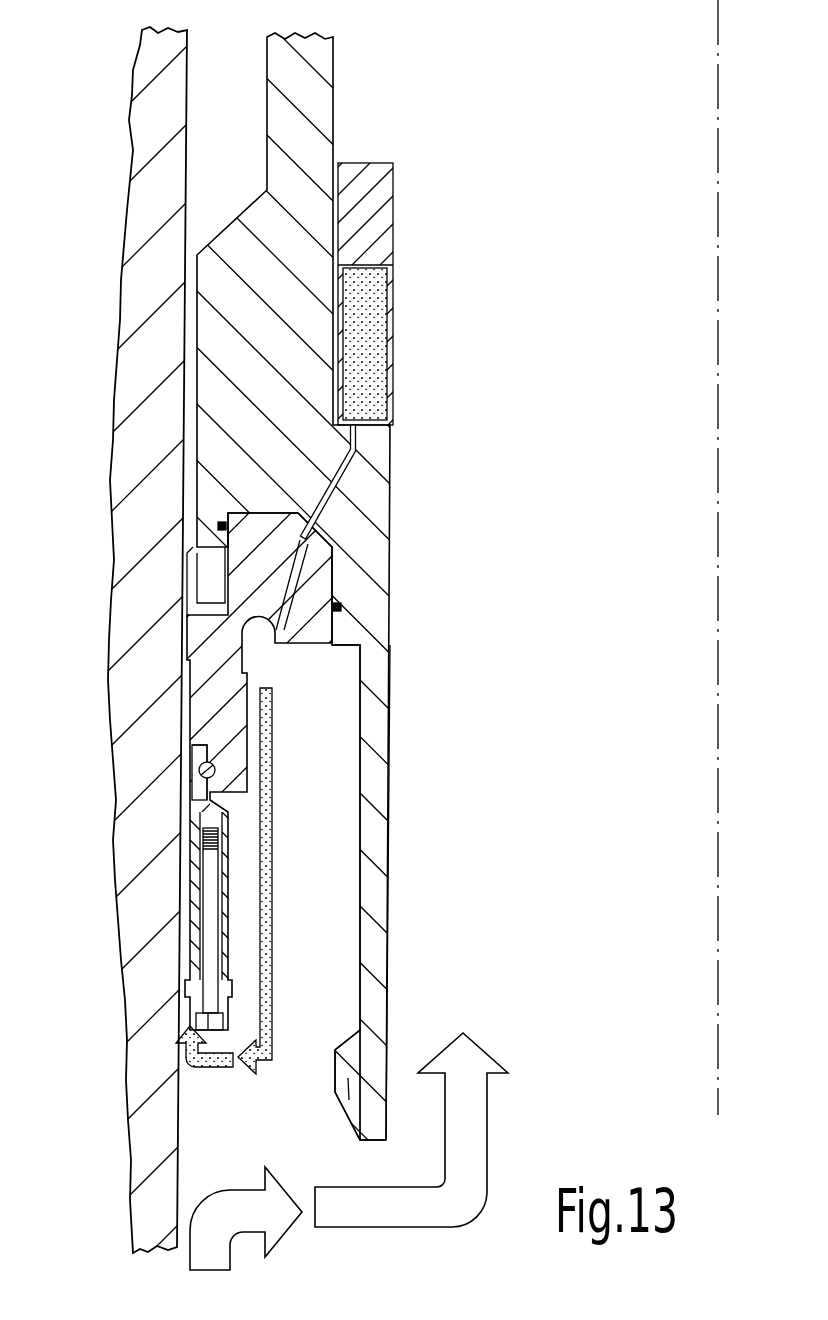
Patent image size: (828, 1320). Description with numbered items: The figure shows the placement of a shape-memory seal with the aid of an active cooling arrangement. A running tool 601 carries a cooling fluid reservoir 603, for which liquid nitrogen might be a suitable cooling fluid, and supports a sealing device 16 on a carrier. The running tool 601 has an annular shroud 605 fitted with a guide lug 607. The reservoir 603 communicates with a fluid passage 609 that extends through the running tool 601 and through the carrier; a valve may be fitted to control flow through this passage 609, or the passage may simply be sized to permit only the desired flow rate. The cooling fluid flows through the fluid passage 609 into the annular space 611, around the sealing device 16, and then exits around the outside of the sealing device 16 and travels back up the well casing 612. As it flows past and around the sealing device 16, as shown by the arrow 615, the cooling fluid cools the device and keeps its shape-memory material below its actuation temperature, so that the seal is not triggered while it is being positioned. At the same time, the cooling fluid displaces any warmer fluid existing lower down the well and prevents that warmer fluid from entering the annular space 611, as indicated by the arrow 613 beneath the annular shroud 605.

The sealing device 16 is at (188, 942).
The running tool 601 is at (300, 92).
The cooling fluid reservoir 603 is at (390, 328).
The annular shroud 605 is at (367, 847).
The guide lug 607 is at (350, 1085).
The fluid passage 609 is at (340, 476).
The annular space 611 is at (325, 722).
The well casing 612 is at (133, 702).
The arrow 613 is at (465, 1112).
The arrow 615 is at (265, 893).